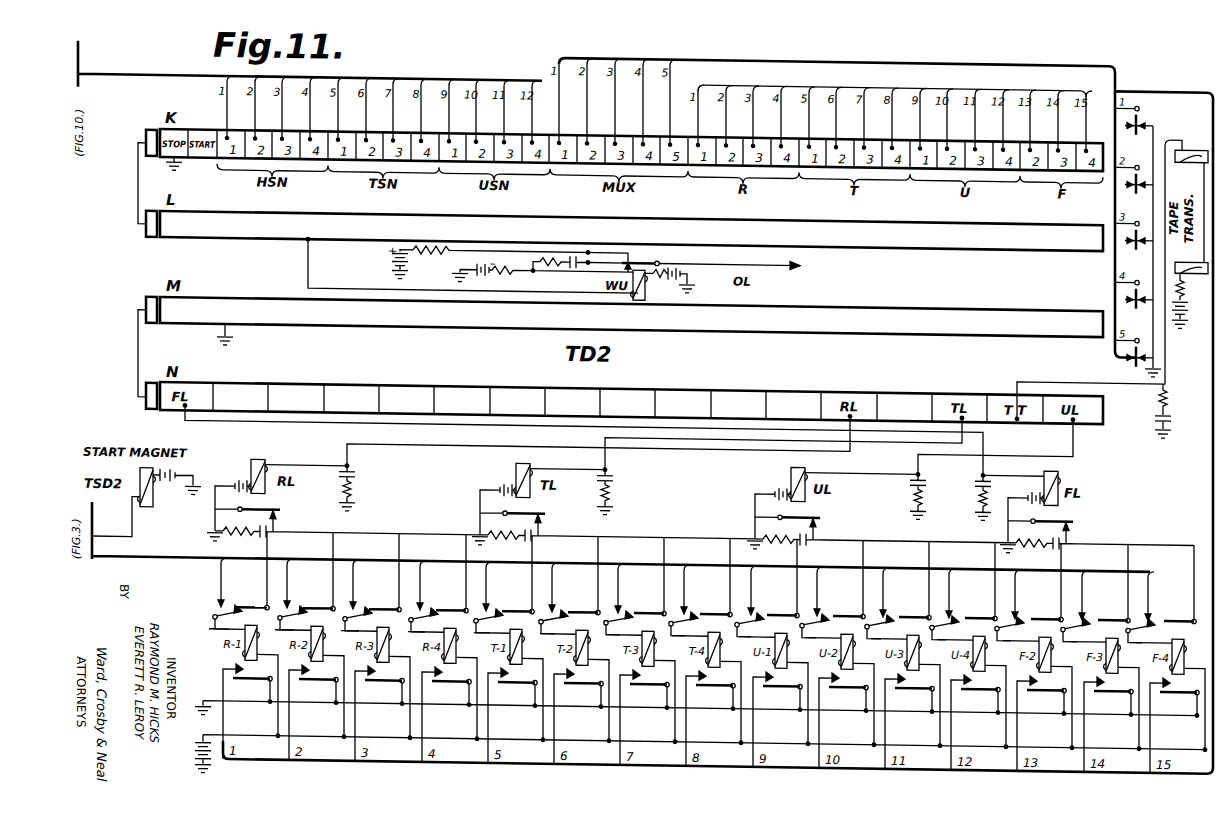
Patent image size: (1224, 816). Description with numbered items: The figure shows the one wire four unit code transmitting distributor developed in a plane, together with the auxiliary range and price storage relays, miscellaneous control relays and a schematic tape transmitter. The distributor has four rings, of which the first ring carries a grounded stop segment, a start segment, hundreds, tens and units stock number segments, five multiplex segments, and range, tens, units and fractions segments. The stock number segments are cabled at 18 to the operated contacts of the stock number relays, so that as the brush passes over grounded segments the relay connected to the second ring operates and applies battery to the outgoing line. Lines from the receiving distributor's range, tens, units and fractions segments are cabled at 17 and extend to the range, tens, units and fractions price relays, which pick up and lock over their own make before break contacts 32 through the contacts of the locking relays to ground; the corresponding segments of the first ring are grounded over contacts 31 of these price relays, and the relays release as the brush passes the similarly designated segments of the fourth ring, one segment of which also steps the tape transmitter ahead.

The cable 17 is at (122, 557).
The cable 18 is at (310, 67).
The contacts 31 is at (711, 719).
The make before break contacts 32 is at (258, 606).